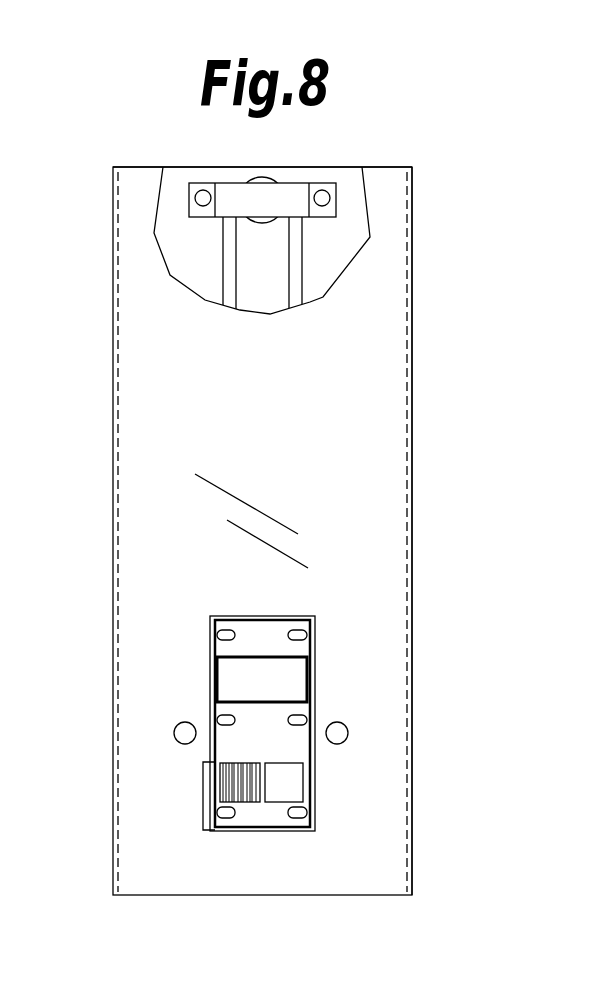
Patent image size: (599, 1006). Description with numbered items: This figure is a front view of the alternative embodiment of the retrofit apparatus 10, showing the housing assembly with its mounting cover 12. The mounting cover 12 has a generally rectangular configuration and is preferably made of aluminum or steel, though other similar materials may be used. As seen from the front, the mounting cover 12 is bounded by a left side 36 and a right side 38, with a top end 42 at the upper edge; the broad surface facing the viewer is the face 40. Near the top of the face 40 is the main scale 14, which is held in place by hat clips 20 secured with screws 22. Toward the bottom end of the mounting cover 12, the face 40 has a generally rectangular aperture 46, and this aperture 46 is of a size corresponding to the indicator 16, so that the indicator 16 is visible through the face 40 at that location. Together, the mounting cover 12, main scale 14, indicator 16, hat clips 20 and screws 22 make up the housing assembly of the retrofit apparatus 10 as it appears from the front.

The retrofit apparatus 10 is at (384, 96).
The mounting cover 12 is at (112, 370).
The main scale 14 is at (258, 263).
The indicator 16 is at (275, 740).
The hat clips 20 is at (282, 195).
The screws 22 is at (197, 191).
The left side 36 is at (112, 575).
The right side 38 is at (412, 570).
The face 40 is at (380, 296).
The top end 42 is at (380, 167).
The aperture 46 is at (208, 803).